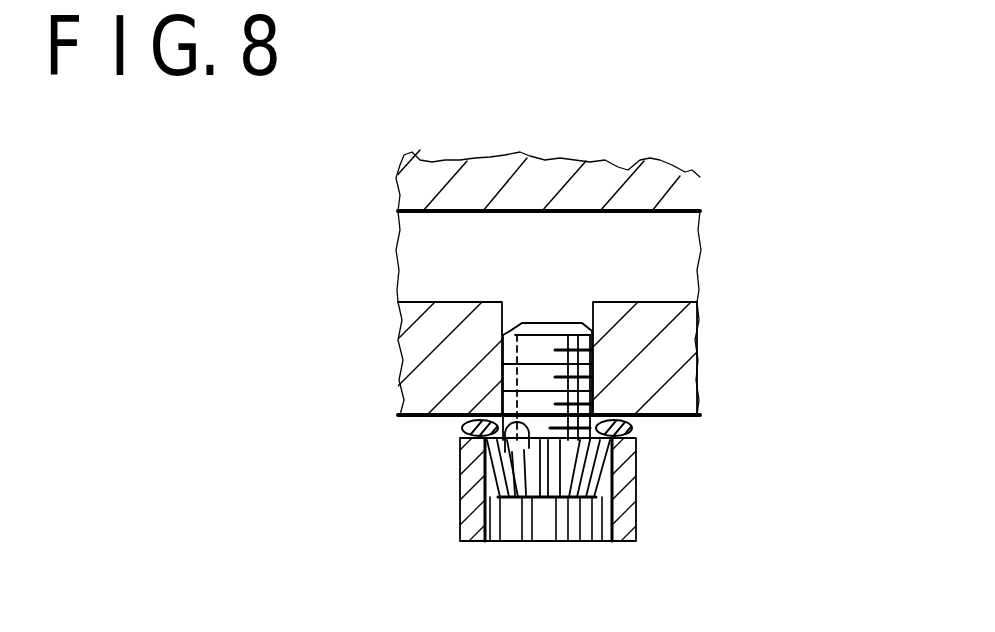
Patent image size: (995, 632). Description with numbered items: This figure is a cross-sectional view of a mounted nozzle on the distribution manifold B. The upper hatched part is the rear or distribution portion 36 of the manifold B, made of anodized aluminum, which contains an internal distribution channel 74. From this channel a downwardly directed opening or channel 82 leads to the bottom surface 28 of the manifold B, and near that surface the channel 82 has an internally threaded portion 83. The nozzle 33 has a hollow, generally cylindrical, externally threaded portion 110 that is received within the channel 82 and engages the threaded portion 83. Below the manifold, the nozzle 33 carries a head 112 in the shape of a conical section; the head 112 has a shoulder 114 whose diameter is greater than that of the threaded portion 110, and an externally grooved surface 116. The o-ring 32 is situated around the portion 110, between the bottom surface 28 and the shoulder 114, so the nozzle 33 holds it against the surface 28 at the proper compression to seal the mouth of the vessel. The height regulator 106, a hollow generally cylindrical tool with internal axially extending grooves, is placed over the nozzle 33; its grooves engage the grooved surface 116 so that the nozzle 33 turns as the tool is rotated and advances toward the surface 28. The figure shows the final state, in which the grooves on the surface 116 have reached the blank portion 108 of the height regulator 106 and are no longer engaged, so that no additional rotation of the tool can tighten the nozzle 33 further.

The rear or distribution portion 36 is at (430, 178).
The internal distribution channel 74 is at (635, 256).
The manifold B is at (712, 193).
The opening 82 is at (516, 300).
The nozzle 33 is at (500, 343).
The internally threaded portion 83 is at (620, 347).
The externally threaded portion 110 is at (503, 380).
The bottom surface 28 is at (680, 420).
The o-ring 32 is at (468, 425).
The shoulder 114 is at (500, 478).
The head 112 is at (492, 505).
The blank portion 108 is at (632, 475).
The height regulator 106 is at (535, 520).
The externally grooved surface 116 is at (530, 500).